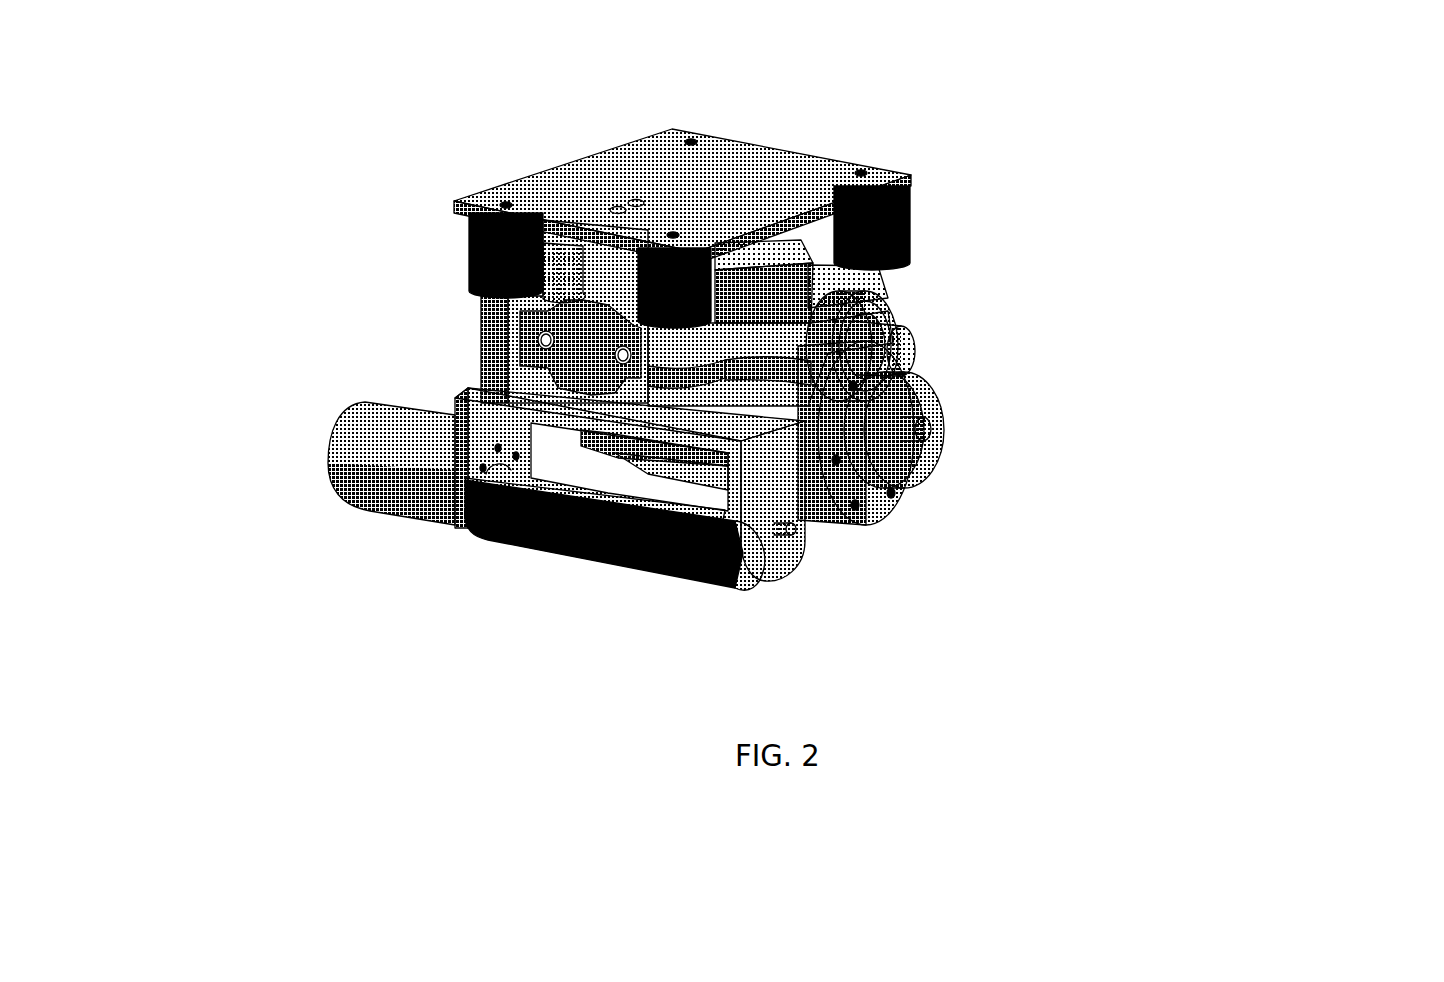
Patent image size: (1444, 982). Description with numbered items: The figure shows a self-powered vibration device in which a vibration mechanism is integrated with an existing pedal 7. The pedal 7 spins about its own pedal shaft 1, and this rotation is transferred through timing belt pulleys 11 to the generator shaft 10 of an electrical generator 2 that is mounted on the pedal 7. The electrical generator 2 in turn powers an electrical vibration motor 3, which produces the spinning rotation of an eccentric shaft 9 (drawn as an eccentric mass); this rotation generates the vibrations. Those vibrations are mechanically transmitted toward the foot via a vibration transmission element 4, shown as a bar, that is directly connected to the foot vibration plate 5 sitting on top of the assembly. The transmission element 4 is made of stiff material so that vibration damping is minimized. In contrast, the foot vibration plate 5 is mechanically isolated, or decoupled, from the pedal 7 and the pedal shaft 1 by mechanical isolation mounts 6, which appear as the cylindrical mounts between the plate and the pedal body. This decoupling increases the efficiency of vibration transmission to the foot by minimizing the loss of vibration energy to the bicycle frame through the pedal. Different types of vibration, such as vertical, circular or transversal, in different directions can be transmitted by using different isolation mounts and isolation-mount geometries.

The pedal shaft 1 is at (914, 330).
The electrical generator 2 is at (812, 517).
The electrical motor 3 is at (352, 509).
The vibration transmission element 4 is at (602, 264).
The foot vibration plate 5 is at (618, 78).
The mechanical isolation mounts 6 is at (905, 212).
The pedal 7 is at (884, 275).
The eccentric shaft 9 is at (538, 564).
The generator shaft 10 is at (917, 447).
The timing belt pulleys 11 is at (882, 378).